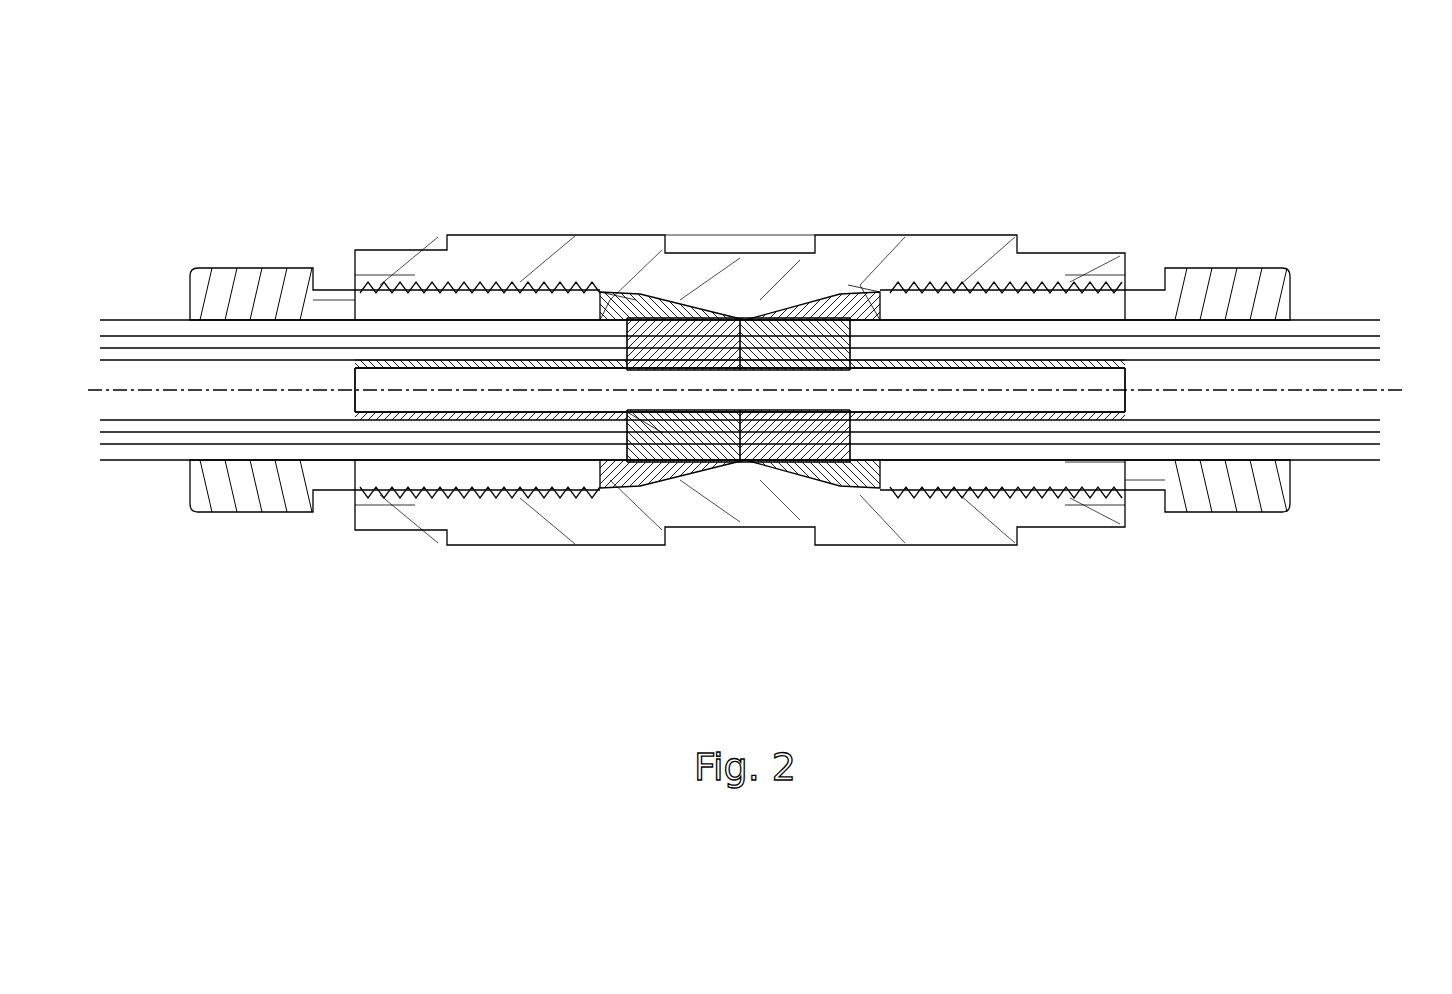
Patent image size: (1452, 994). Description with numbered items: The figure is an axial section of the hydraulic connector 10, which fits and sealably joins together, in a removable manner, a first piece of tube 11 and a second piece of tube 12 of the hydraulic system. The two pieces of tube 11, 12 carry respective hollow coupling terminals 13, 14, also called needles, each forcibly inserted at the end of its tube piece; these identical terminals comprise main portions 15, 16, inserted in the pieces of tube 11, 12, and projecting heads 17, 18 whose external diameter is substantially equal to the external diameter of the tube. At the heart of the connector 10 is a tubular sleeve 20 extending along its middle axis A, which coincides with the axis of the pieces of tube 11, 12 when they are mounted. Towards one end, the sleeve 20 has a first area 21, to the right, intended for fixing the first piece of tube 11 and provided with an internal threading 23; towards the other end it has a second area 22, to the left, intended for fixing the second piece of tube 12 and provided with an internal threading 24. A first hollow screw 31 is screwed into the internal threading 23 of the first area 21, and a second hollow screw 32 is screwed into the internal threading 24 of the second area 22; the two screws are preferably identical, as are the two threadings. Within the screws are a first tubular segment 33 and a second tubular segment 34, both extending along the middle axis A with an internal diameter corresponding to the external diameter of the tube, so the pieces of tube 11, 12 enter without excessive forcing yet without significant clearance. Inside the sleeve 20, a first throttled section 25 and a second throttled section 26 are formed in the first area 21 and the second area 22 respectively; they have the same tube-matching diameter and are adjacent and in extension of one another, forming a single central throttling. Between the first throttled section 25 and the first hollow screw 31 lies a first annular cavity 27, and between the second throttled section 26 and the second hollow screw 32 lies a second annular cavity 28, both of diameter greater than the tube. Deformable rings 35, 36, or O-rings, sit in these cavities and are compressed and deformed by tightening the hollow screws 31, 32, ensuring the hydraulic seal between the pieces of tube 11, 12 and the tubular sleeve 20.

The hydraulic connector 10 is at (1200, 187).
The first piece of tube 11 is at (1353, 447).
The second piece of tube 12 is at (122, 442).
The coupling terminal 13 is at (1133, 380).
The coupling terminal 14 is at (343, 383).
The main portion 15 is at (1068, 462).
The main portion 16 is at (540, 413).
The projecting head 17 is at (833, 438).
The projecting head 18 is at (663, 433).
The tubular sleeve 20 is at (727, 270).
The first area 21 is at (950, 203).
The second area 22 is at (513, 215).
The internal threading 23 is at (1022, 285).
The internal threading 24 is at (470, 290).
The first throttled section 25 is at (757, 462).
The second throttled section 26 is at (712, 462).
The first annular cavity 27 is at (848, 285).
The second annular cavity 28 is at (636, 300).
The first hollow screw 31 is at (1255, 290).
The second hollow screw 32 is at (312, 300).
The first tubular segment 33 is at (1252, 463).
The second tubular segment 34 is at (232, 460).
The deformable ring 35 is at (860, 285).
The deformable ring 36 is at (610, 300).
The middle axis A is at (1373, 390).